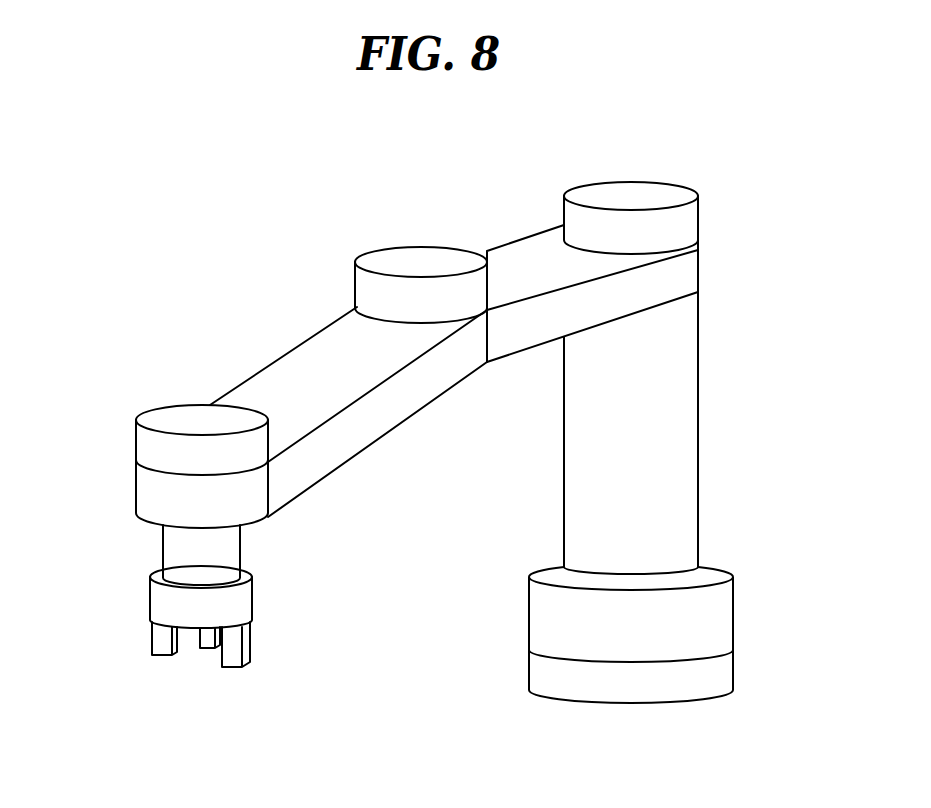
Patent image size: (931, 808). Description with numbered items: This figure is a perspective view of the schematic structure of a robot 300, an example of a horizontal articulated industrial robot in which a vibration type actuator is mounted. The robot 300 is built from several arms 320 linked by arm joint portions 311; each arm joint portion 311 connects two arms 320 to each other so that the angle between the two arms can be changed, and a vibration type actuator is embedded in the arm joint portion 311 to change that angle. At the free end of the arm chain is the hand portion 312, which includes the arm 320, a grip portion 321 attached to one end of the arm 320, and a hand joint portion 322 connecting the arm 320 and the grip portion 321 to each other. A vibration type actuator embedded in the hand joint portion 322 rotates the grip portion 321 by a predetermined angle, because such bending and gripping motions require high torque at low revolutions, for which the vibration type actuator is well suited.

The robot 300 is at (439, 427).
The arm joint portion 311 is at (683, 225).
The arm 320 is at (515, 263).
The hand portion 312 is at (222, 613).
The hand joint portion 322 is at (173, 604).
The grip portion 321 is at (158, 642).